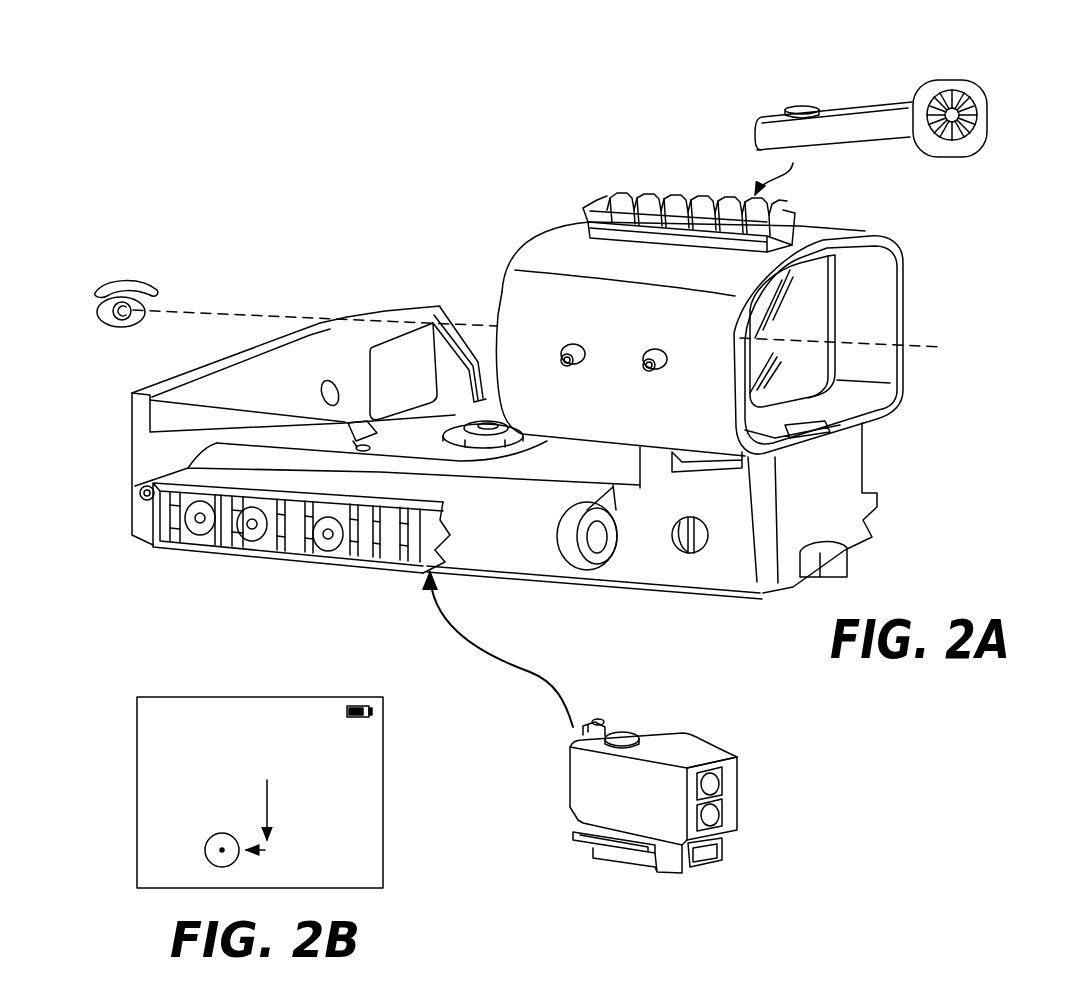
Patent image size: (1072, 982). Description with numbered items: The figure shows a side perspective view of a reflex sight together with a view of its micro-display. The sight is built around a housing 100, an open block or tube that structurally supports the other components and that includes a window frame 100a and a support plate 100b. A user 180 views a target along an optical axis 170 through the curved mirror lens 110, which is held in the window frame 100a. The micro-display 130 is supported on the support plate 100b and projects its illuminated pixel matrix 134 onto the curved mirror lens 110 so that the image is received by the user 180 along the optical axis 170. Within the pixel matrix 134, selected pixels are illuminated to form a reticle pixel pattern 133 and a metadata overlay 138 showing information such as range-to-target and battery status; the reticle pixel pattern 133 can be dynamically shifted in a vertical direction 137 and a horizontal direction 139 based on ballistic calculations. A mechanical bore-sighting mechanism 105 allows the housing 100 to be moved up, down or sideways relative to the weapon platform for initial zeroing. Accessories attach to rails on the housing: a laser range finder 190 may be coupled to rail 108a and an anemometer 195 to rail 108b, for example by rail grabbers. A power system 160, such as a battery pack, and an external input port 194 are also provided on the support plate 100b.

In FIG. 2A, the housing 100 is at (940, 403).
In FIG. 2A, the window frame 100a is at (893, 257).
In FIG. 2A, the support plate 100b is at (853, 533).
In FIG. 2A, the mechanical bore-sighting mechanism 105 is at (493, 413).
In FIG. 2A, the rail 108a is at (377, 570).
In FIG. 2A, the rail 108b is at (781, 205).
In FIG. 2A, the curved mirror lens 110 is at (790, 323).
In FIG. 2A, the micro-display 130 is at (272, 656).
In FIG. 2B, the reticle pixel pattern 133 is at (205, 848).
In FIG. 2B, the illuminated pixel matrix 134 is at (383, 747).
In FIG. 2B, the vertical direction 137 is at (270, 808).
In FIG. 2B, the metadata overlay 138 is at (350, 698).
In FIG. 2B, the horizontal direction 139 is at (263, 853).
In FIG. 2A, the power system 160 is at (505, 540).
In FIG. 2A, the optical axis 170 is at (246, 311).
In FIG. 2A, the user 180 is at (123, 280).
In FIG. 2A, the laser range finder 190 is at (693, 758).
In FIG. 2A, the external input port 194 is at (130, 487).
In FIG. 2A, the anemometer 195 is at (877, 103).